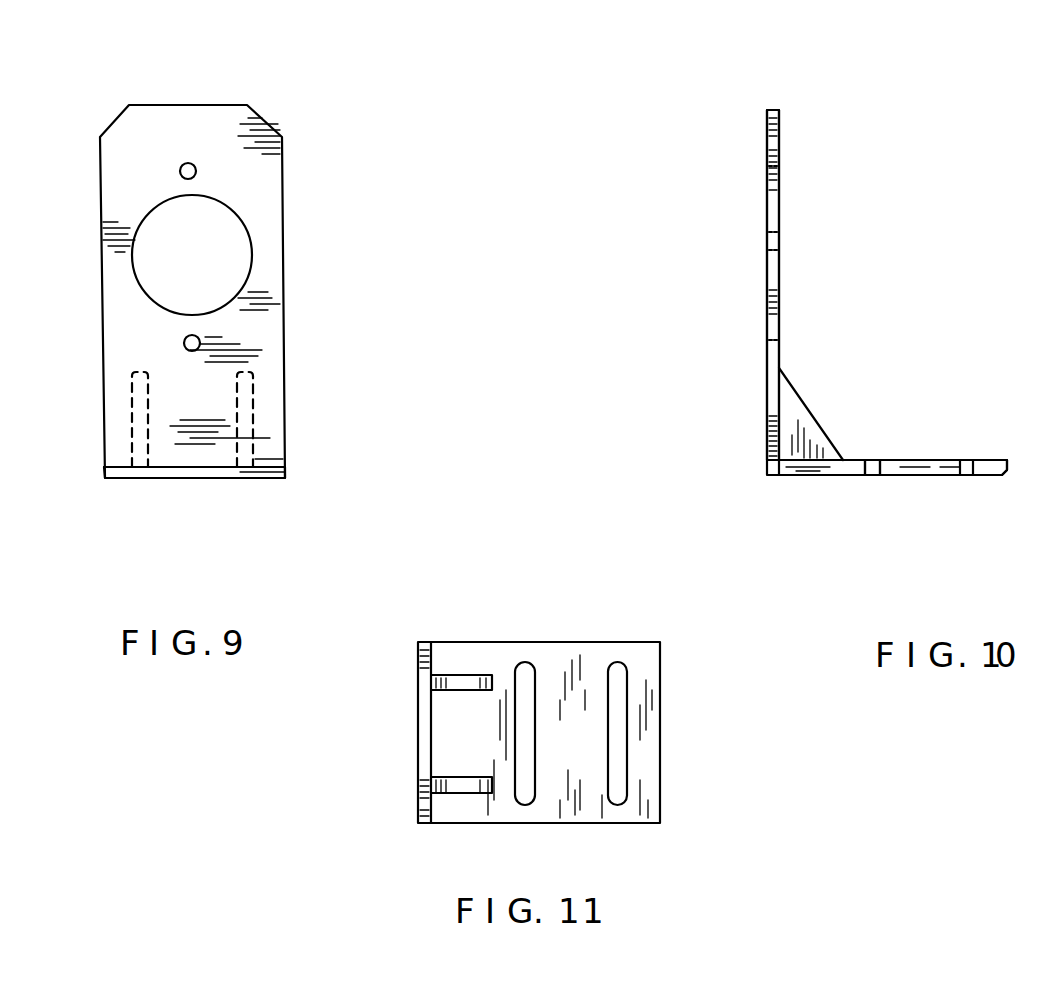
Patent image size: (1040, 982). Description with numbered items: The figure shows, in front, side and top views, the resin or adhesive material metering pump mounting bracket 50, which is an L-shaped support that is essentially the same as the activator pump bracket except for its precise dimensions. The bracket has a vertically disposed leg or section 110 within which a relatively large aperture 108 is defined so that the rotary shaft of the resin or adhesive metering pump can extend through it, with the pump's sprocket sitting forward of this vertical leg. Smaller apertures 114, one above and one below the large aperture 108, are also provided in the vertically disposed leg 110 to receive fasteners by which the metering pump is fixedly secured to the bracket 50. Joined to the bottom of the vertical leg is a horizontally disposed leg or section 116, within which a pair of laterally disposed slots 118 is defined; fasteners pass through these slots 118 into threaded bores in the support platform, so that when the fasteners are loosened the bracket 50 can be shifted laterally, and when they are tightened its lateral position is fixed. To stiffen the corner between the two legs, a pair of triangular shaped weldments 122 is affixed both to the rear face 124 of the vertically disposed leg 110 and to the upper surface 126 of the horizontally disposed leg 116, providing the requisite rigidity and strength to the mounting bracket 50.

In FIG. 9, the resin or adhesive material metering pump mounting bracket 50 is at (283, 212).
In FIG. 10, the resin or adhesive material metering pump mounting bracket 50 is at (778, 110).
In FIG. 9, the aperture 108 is at (229, 200).
In FIG. 10, the aperture 108 is at (780, 240).
In FIG. 9, the vertically disposed leg or section 110 is at (211, 152).
In FIG. 10, the vertically disposed leg or section 110 is at (767, 386).
In FIG. 11, the vertically disposed leg or section 110 is at (420, 692).
In FIG. 9, the apertures 114 is at (180, 172).
In FIG. 10, the apertures 114 is at (767, 167).
In FIG. 9, the horizontally disposed leg or section 116 is at (232, 472).
In FIG. 10, the horizontally disposed leg or section 116 is at (925, 460).
In FIG. 11, the horizontally disposed leg or section 116 is at (585, 753).
In FIG. 10, the laterally disposed slots 118 is at (868, 478).
In FIG. 11, the laterally disposed slots 118 is at (526, 664).
In FIG. 9, the triangular shaped weldments 122 is at (140, 424).
In FIG. 10, the triangular shaped weldments 122 is at (767, 442).
In FIG. 11, the triangular shaped weldments 122 is at (457, 680).
In FIG. 10, the rear face 124 is at (780, 369).
In FIG. 10, the upper surface 126 is at (856, 460).